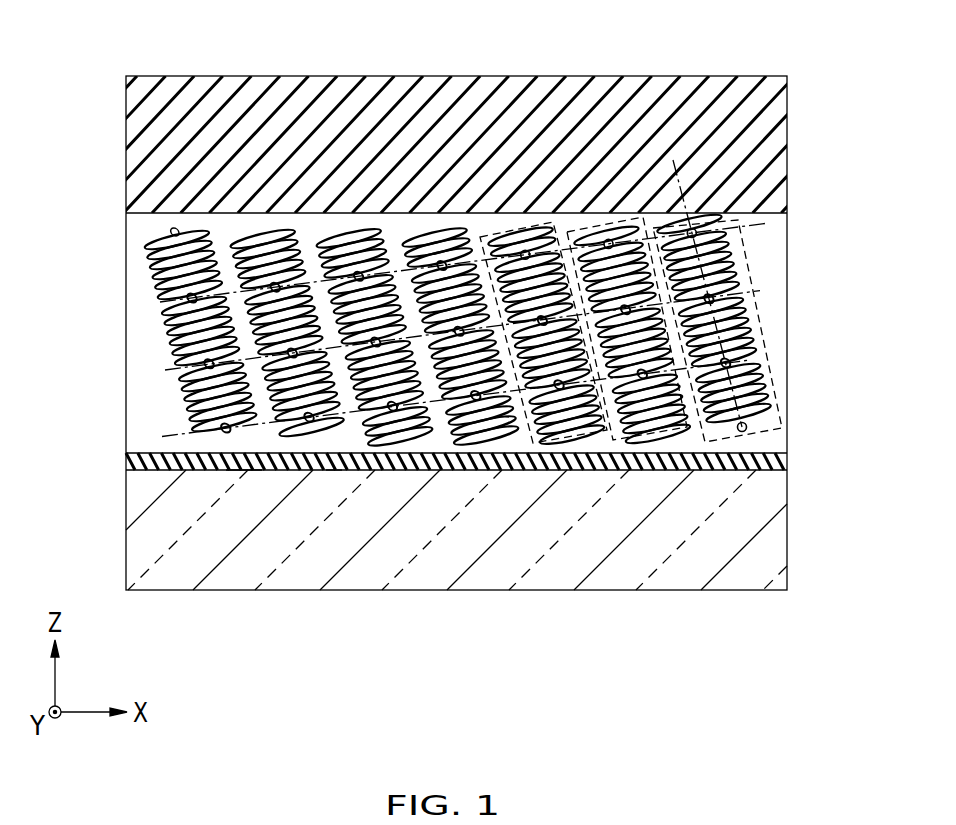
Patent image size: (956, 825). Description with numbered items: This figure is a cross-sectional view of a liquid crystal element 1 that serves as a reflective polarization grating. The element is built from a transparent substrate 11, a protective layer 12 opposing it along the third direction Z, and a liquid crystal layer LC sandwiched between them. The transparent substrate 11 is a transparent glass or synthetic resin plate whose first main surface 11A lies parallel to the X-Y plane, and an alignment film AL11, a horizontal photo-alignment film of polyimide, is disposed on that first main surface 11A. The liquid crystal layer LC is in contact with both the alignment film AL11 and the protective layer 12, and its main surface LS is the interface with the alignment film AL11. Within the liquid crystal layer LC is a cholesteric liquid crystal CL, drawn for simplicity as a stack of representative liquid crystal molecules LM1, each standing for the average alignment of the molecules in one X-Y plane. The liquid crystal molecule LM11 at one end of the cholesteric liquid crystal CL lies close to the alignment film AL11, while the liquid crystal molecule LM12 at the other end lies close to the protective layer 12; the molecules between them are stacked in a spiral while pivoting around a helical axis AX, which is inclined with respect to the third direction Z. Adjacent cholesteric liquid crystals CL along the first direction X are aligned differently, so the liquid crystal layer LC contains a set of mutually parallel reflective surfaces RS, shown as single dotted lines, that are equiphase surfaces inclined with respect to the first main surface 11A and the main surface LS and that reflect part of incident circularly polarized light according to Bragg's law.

The display device 1 is at (105, 25).
The protective layer 12 is at (128, 132).
The transparent substrate 11 is at (128, 545).
The first main surface 11A is at (258, 457).
The alignment film AL11 is at (128, 462).
The main surface LS is at (333, 458).
The liquid crystal layer LC is at (130, 260).
The reflective surface RS is at (162, 436).
The helical axis AX is at (673, 180).
The liquid crystal molecule LM1 is at (740, 222).
The liquid crystal molecule LM11 is at (648, 442).
The liquid crystal molecule LM12 is at (690, 229).
The cholesteric liquid crystal CL is at (705, 453).